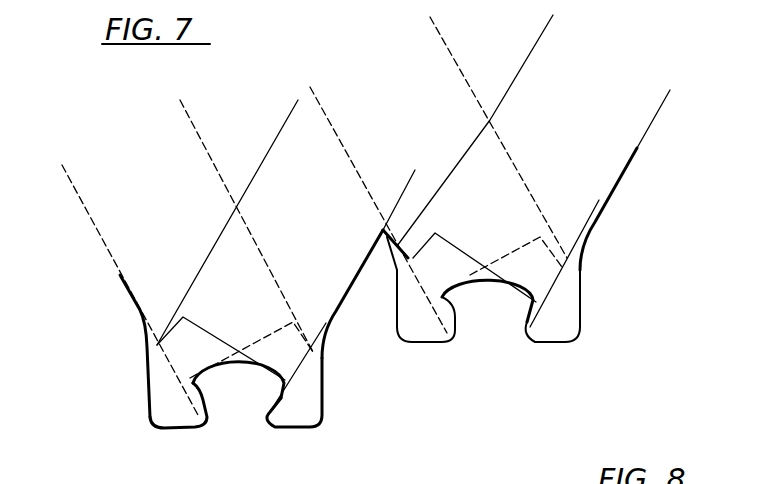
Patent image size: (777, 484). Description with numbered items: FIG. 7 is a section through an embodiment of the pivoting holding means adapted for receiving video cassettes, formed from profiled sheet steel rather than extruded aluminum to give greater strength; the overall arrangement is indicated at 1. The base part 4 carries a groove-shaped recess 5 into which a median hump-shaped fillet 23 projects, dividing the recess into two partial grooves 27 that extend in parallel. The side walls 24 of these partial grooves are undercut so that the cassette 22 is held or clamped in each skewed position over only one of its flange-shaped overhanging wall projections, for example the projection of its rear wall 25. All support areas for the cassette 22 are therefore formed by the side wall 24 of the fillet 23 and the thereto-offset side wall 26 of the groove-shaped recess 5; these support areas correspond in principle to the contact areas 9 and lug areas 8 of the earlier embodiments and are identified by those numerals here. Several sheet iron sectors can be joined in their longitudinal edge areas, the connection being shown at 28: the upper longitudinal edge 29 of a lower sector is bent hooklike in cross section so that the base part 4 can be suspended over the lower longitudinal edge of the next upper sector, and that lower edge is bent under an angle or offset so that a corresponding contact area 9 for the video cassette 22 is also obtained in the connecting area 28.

The saw blade 1 is at (392, 249).
The base part 4 is at (580, 297).
The groove-shaped recess 5 is at (306, 398).
The lug area 8 is at (273, 405).
The contact area 9 is at (399, 245).
The cassette 22 is at (281, 131).
The hump-shaped fillet 23 is at (238, 363).
The side wall 24 is at (196, 410).
The rear wall 25 is at (533, 325).
The side wall of the groove-shaped recess 26 is at (148, 358).
The partial groove 27 is at (420, 327).
The connection 28 is at (376, 226).
The upper longitudinal edge 29 is at (401, 244).